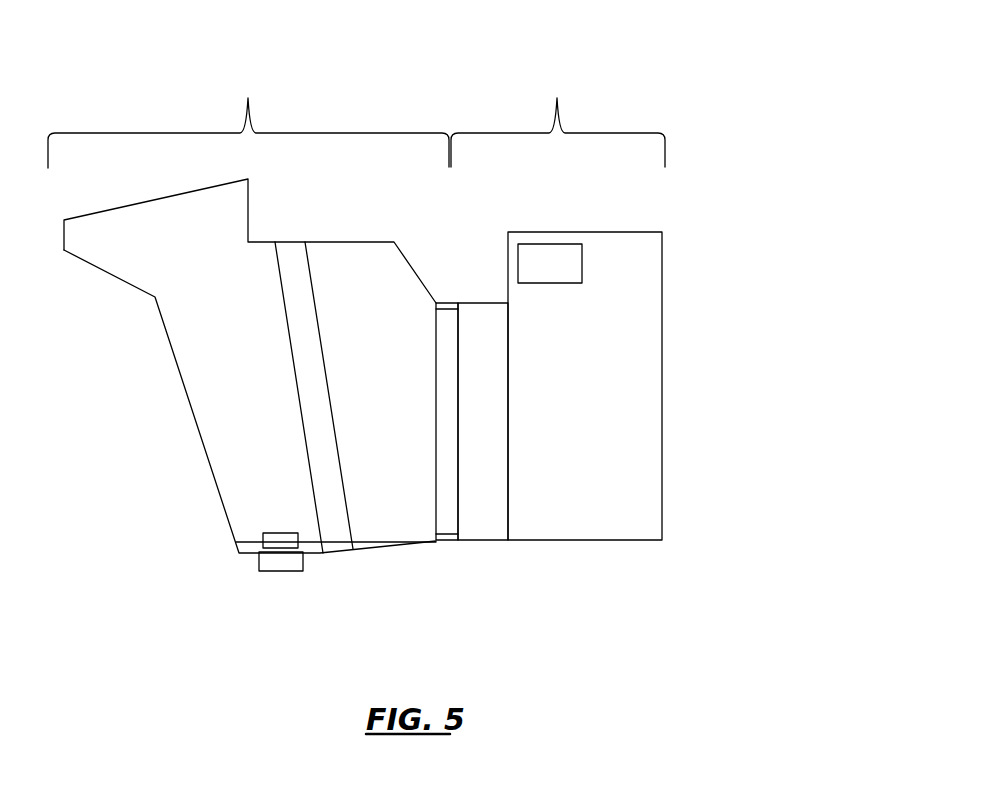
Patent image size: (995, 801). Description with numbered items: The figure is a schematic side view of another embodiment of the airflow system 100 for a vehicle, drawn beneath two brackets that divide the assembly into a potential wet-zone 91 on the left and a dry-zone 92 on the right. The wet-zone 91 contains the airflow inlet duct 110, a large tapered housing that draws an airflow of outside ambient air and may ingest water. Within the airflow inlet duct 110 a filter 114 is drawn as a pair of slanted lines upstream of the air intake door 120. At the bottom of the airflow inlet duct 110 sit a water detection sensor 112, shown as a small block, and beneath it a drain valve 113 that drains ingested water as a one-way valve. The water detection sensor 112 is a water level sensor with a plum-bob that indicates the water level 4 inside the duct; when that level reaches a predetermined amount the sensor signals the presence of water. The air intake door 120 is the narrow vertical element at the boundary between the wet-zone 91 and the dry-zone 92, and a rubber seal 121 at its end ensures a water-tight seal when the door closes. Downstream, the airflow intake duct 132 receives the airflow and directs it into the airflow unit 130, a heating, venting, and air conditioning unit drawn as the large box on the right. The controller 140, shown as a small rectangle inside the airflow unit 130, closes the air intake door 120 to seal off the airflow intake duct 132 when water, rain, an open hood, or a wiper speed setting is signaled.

The airflow system 100 is at (457, 88).
The wet-zone 91 is at (248, 117).
The dry-zone 92 is at (558, 117).
The airflow inlet duct 110 is at (178, 368).
The water level 4 is at (250, 542).
The filter 114 is at (292, 270).
The water detection sensor 112 is at (278, 537).
The drain valve 113 is at (277, 565).
The air intake door 120 is at (445, 452).
The rubber seal 121 is at (446, 538).
The airflow intake duct 132 is at (490, 530).
The airflow unit 130 is at (664, 262).
The controller 140 is at (551, 252).